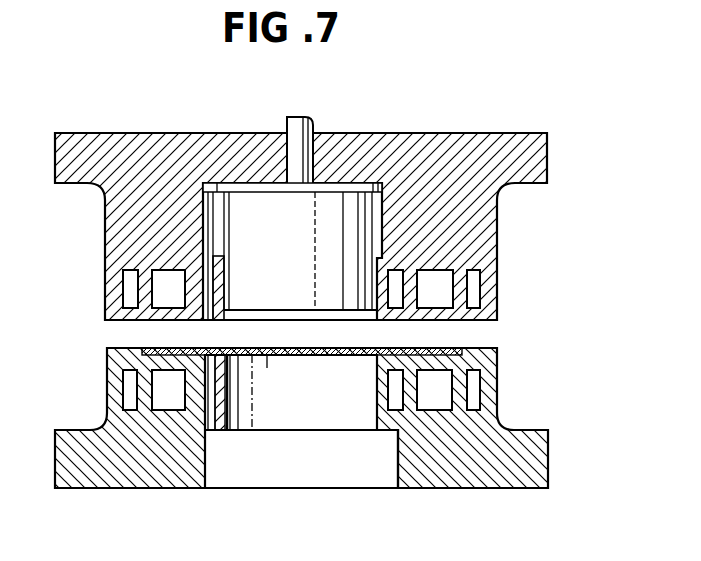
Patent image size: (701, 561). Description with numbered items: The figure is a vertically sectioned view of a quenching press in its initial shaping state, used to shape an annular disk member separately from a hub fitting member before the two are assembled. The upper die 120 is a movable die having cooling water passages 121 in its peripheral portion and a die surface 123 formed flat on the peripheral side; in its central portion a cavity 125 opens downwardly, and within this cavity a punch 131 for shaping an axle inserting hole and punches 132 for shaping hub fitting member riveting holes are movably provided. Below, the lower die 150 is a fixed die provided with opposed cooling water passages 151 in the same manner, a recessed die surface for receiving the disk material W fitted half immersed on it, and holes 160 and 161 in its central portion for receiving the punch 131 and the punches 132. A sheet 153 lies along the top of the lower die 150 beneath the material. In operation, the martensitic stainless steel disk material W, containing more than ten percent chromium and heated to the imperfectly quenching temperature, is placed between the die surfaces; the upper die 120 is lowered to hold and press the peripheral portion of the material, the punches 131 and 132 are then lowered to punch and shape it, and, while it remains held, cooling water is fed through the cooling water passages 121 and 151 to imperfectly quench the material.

The upper die 120 is at (497, 222).
The cooling water passages 121 is at (475, 278).
The die surface 123 is at (140, 321).
The cavity 125 is at (381, 215).
The punch 131 is at (333, 205).
The punches 132 is at (210, 207).
The lower die 150 is at (438, 488).
The cooling water passages 151 is at (430, 392).
The insulating sheet 153 is at (155, 351).
The hole 160 is at (335, 432).
The hole 161 is at (209, 432).
The disk material W is at (290, 358).